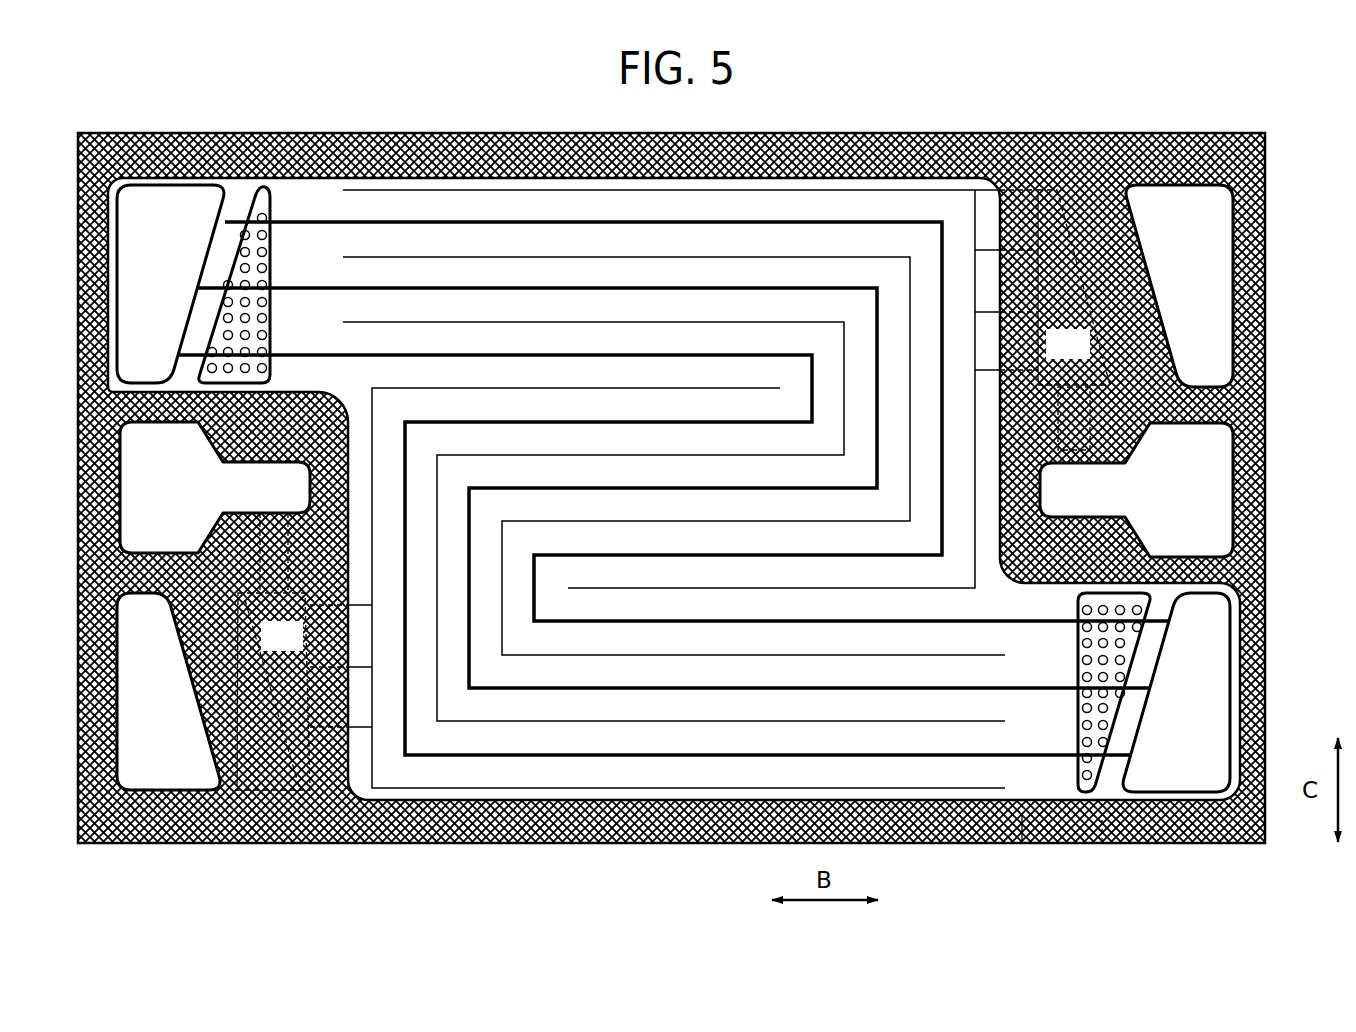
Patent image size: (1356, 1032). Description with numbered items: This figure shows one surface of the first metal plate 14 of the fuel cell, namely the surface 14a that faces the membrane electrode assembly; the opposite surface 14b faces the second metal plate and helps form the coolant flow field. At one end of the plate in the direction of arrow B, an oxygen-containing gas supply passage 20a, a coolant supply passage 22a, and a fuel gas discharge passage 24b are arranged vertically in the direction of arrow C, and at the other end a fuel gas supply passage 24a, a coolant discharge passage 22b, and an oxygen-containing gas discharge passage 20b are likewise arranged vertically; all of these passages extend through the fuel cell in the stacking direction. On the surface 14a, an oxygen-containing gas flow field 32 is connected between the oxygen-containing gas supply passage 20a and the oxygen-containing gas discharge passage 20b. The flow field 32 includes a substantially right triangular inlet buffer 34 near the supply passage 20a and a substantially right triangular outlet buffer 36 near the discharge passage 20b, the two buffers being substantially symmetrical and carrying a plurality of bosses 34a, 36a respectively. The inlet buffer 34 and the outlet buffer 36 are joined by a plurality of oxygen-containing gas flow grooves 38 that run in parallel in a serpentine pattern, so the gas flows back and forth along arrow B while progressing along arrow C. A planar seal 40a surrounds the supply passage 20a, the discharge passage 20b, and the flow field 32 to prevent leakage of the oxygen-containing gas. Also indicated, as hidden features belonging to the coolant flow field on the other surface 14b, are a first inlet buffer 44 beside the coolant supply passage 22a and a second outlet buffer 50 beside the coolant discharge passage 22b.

The first metal plate 14 is at (342, 60).
The surface of the first metal plate 14a is at (1022, 845).
The surface of the first metal plate 14b is at (1101, 846).
The oxygen-containing gas supply passage 20a is at (170, 284).
The oxygen-containing gas discharge passage 20b is at (1176, 692).
The coolant supply passage 22a is at (215, 487).
The coolant discharge passage 22b is at (1136, 490).
The fuel gas supply passage 24a is at (1179, 286).
The fuel gas discharge passage 24b is at (168, 691).
The oxygen-containing gas flow field 32 is at (415, 222).
The inlet buffer 34 is at (274, 214).
The bosses 34a is at (266, 286).
The outlet buffer 36 is at (1074, 760).
The bosses 36a is at (1081, 677).
The oxygen-containing gas flow grooves 38 is at (628, 226).
The planar seal 40a is at (513, 815).
The first inlet buffer 44 is at (292, 651).
The second outlet buffer 50 is at (1055, 320).